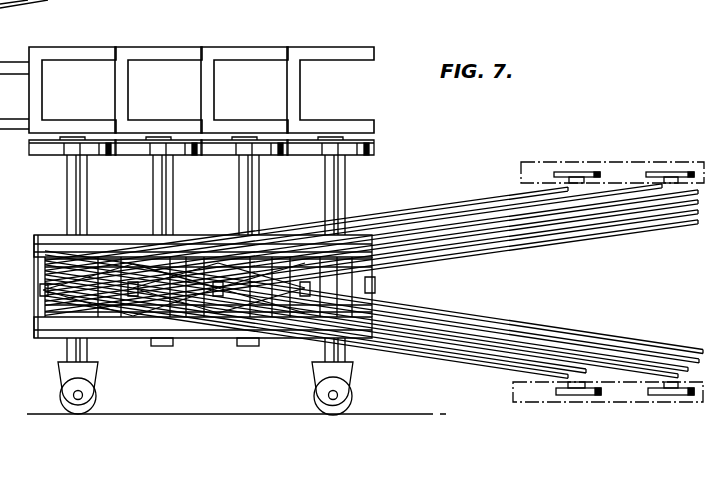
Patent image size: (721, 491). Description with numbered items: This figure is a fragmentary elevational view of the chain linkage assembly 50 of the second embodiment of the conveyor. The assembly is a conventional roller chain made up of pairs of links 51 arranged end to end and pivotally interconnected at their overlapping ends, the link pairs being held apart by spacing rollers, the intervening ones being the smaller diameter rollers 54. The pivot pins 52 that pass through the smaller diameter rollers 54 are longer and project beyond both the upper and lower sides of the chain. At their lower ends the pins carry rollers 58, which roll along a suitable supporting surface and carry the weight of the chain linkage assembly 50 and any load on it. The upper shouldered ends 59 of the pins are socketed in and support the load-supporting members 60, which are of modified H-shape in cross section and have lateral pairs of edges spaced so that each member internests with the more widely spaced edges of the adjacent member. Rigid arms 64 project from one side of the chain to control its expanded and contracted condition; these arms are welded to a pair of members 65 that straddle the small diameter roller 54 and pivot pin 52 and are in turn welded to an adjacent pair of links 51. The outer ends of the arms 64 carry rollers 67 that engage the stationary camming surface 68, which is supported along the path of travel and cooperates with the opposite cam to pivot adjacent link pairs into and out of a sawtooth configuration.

The chain linkage assembly 50 is at (53, 232).
The links 51 is at (36, 246).
The pivot pins 52 is at (67, 180).
The smaller diameter rollers 54 is at (145, 257).
The rollers 58 is at (98, 372).
The upper shouldered ends 59 is at (160, 150).
The load-supporting members 60 is at (131, 43).
The rigid arms 64 is at (448, 214).
The members 65 is at (42, 291).
The rollers 67 is at (651, 170).
The camming surface 68 is at (570, 143).